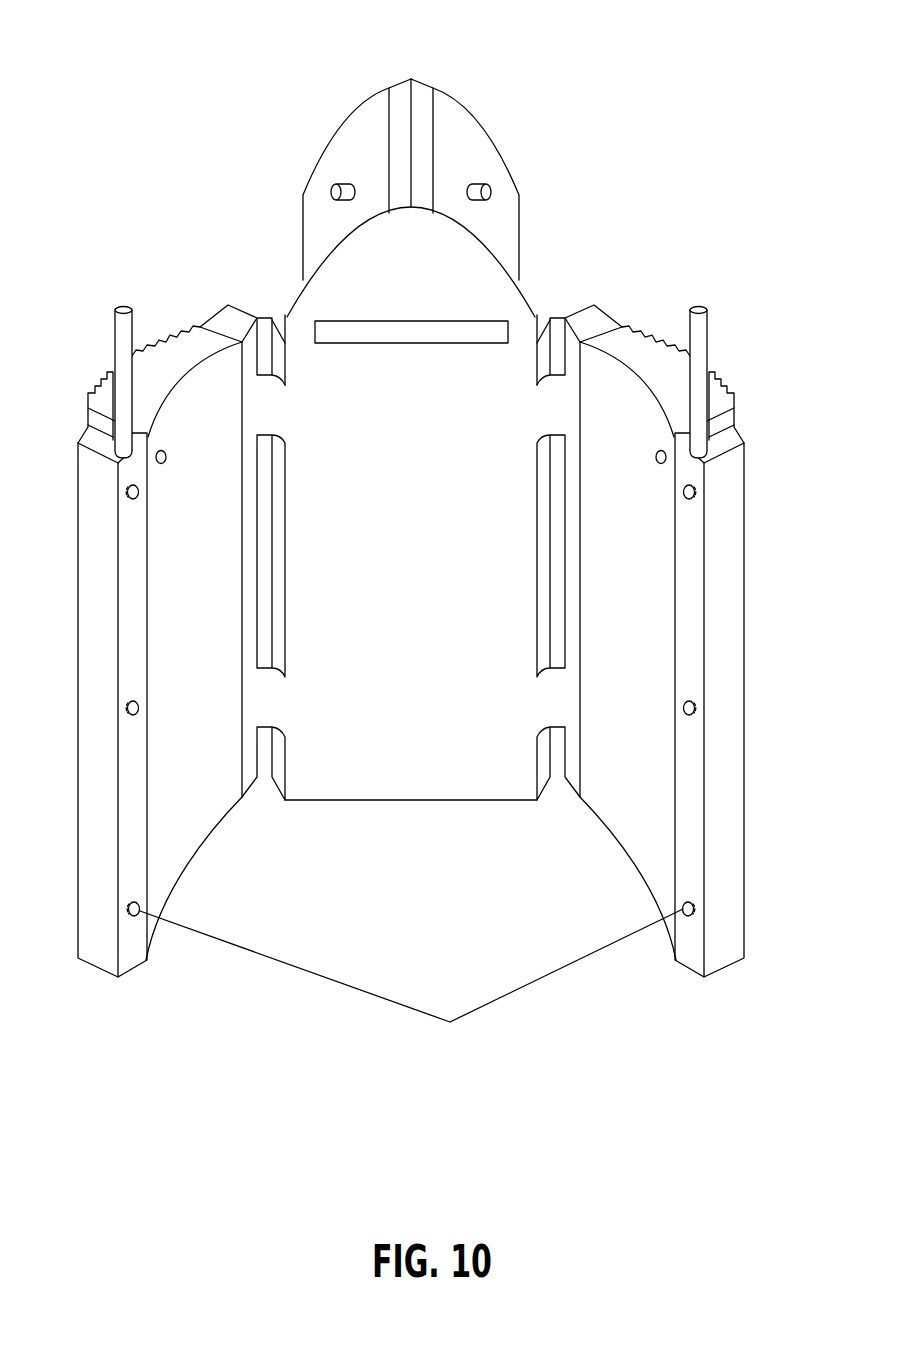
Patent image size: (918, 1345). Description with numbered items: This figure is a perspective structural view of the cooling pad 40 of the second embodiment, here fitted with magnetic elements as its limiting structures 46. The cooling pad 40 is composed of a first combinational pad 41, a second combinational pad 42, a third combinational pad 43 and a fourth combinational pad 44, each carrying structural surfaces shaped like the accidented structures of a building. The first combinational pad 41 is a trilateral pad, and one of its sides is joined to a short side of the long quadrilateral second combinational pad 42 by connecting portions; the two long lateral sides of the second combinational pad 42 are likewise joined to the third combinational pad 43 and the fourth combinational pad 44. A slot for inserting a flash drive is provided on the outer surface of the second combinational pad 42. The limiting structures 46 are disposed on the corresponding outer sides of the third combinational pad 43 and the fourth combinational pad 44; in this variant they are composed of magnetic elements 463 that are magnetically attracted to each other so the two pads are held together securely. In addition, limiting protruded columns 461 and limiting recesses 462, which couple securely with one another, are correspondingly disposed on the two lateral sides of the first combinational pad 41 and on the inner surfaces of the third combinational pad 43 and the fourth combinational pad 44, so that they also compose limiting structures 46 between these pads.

The cooling pad 40 is at (295, 108).
The first combinational pad 41 is at (357, 263).
The second combinational pad 42 is at (413, 775).
The third combinational pad 43 is at (190, 840).
The fourth combinational pad 44 is at (627, 823).
The limiting structures 46 is at (780, 135).
The limiting protruded columns 461 is at (490, 190).
The limiting recesses 462 is at (167, 457).
The magnetic elements 463 is at (411, 1003).